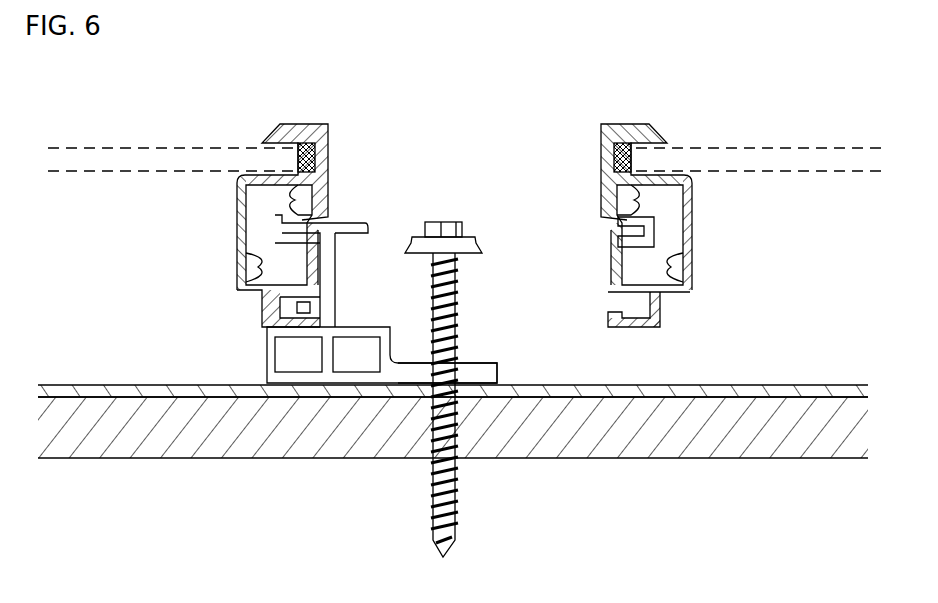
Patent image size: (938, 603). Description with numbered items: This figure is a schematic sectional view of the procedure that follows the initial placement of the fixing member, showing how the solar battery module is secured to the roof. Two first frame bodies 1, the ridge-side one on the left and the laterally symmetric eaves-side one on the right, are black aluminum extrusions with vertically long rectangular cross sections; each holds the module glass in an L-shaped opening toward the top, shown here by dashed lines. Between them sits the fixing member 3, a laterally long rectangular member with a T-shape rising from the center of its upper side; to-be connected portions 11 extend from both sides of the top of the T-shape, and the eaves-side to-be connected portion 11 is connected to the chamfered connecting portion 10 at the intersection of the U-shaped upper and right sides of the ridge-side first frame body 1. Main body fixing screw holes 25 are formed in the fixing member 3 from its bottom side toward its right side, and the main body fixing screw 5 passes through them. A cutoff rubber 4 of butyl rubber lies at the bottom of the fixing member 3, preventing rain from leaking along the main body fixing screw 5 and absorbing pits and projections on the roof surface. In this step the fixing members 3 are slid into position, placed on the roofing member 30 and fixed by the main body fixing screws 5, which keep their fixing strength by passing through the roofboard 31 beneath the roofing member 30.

The first frame body 1 is at (237, 243).
The fixing member 3 is at (330, 237).
The cutoff rubber 4 is at (300, 383).
The main body fixing screw 5 is at (462, 222).
The connecting portion 10 is at (612, 260).
The to-be connected portion 11 is at (355, 228).
The main body fixing screw hole 25 is at (458, 368).
The roofing member 30 is at (695, 392).
The roofboard 31 is at (680, 433).